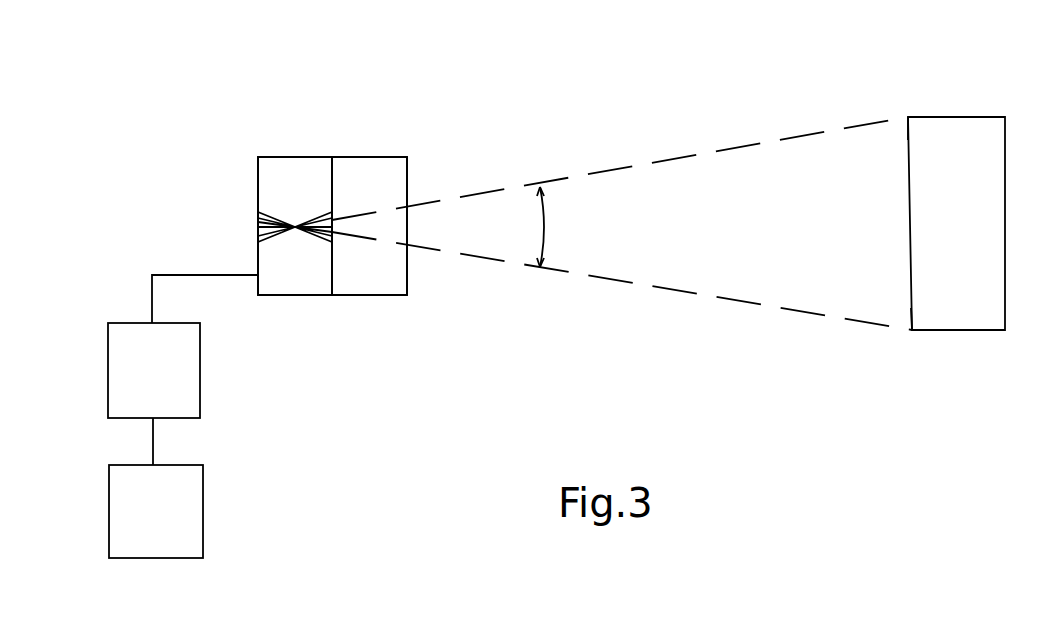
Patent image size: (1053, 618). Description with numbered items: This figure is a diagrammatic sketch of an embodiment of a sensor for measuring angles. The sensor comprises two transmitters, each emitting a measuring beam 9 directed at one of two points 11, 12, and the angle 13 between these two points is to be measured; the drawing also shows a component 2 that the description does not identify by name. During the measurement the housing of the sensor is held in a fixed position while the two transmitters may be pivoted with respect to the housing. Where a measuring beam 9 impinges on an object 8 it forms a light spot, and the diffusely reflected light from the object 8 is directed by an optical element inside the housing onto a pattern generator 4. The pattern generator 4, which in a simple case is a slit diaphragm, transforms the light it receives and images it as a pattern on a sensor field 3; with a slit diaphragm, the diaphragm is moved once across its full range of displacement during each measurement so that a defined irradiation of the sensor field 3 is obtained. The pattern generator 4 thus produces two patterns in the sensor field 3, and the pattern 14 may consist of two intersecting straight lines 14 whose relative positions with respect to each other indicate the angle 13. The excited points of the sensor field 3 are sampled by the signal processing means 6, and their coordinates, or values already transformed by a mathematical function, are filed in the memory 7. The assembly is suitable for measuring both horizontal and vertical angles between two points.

The transmitter 2 is at (267, 261).
The sensor field 3 is at (272, 167).
The pattern generator 4 is at (362, 177).
The signal processing means 6 is at (185, 400).
The memory 7 is at (188, 512).
The object 8 is at (990, 212).
The measuring beam 9 is at (660, 157).
The point 11 is at (912, 330).
The point 12 is at (908, 117).
The angle 13 is at (545, 240).
The pattern 14 is at (322, 240).